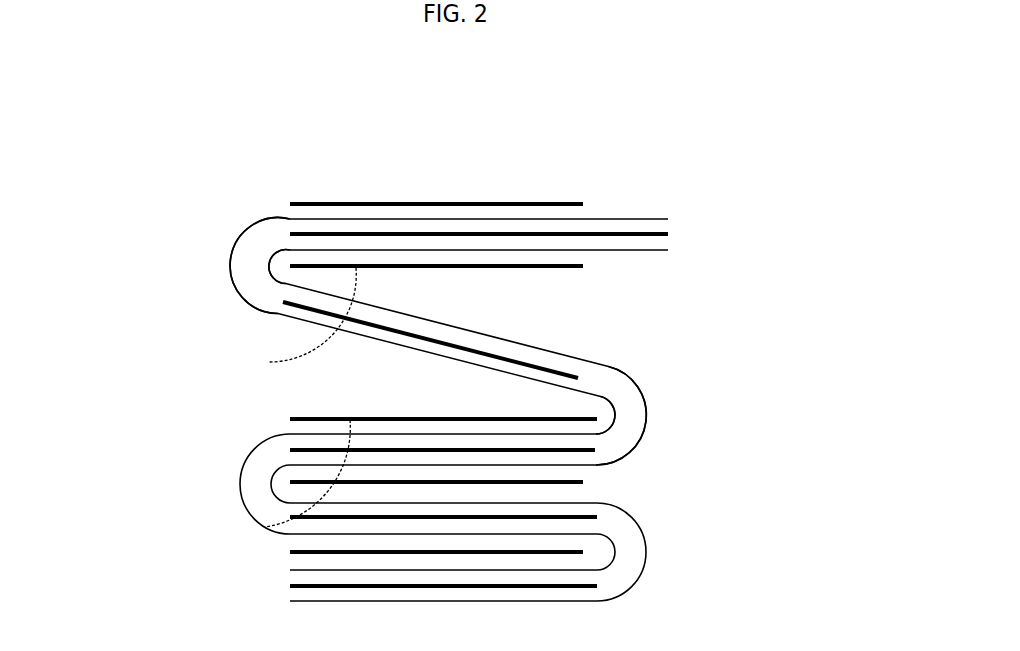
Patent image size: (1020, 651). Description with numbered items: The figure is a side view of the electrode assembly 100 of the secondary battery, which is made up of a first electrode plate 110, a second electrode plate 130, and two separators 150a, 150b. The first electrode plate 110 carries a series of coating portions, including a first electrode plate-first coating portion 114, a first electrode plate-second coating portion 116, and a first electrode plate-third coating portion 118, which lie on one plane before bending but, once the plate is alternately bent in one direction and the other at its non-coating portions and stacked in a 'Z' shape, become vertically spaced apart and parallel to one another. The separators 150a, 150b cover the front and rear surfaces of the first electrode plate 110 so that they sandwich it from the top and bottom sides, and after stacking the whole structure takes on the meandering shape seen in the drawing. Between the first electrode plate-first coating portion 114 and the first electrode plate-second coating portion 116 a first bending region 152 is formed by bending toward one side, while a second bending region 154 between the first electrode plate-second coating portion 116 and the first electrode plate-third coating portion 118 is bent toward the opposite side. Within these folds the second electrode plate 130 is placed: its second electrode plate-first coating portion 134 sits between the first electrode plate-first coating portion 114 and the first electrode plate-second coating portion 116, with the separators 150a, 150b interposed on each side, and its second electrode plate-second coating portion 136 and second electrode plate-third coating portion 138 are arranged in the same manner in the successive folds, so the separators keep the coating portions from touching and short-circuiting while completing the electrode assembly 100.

The electrode assembly 100 is at (722, 179).
The first electrode plate 110 is at (842, 263).
The first electrode plate-first coating portion 114 is at (562, 447).
The first electrode plate-second coating portion 116 is at (555, 372).
The first electrode plate-third coating portion 118 is at (568, 239).
The second electrode plate 130 is at (92, 222).
The second electrode plate-first coating portion 134 is at (300, 530).
The second electrode plate-second coating portion 136 is at (328, 332).
The second electrode plate-third coating portion 138 is at (337, 204).
The separator 150a is at (620, 462).
The separator 150b is at (257, 450).
The first bending region 152 is at (655, 399).
The second bending region 154 is at (232, 284).